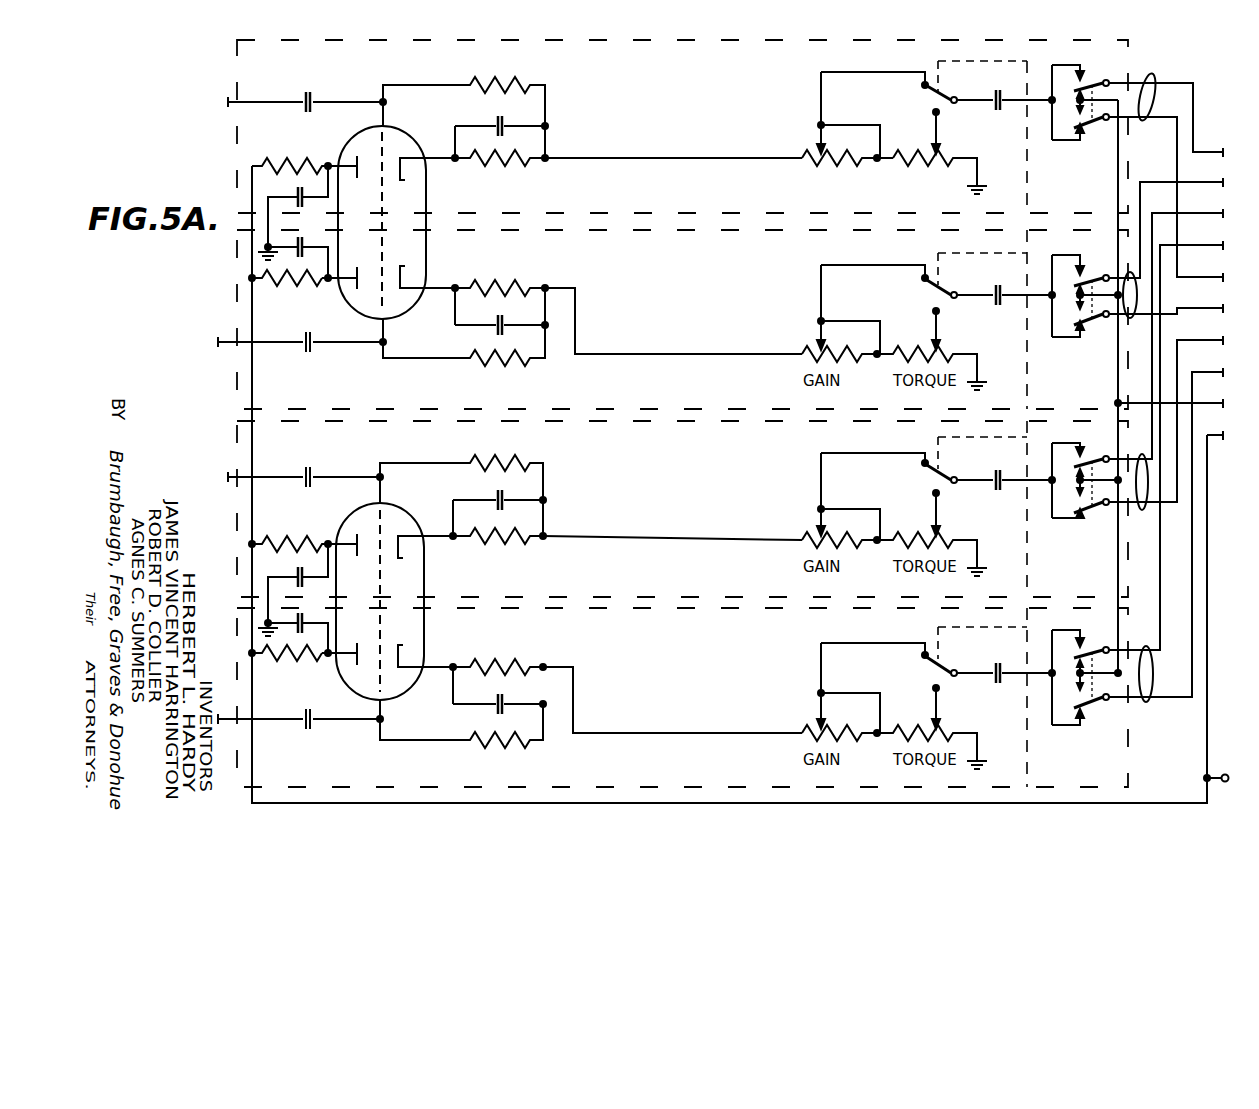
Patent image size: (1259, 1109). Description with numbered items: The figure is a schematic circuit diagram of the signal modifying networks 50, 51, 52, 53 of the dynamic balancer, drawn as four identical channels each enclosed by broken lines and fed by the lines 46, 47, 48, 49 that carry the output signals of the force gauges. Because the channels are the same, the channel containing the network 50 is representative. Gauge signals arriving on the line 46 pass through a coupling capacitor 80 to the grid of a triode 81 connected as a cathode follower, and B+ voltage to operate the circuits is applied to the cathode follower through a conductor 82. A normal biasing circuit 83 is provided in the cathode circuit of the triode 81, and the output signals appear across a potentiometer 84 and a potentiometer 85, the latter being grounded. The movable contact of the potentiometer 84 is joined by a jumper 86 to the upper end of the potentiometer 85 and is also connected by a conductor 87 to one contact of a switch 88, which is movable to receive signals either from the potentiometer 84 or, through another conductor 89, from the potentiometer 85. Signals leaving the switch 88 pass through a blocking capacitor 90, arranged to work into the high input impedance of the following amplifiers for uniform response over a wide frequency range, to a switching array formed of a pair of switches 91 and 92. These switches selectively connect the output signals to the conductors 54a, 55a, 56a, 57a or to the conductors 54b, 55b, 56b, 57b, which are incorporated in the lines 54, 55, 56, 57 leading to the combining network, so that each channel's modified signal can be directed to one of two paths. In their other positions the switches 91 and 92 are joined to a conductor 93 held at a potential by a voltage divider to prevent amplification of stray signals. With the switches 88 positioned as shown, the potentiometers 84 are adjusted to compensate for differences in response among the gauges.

The line 46 is at (229, 100).
The line 47 is at (220, 341).
The line 48 is at (229, 476).
The line 49 is at (228, 718).
The signal modifying network 50 is at (268, 40).
The signal modifying network 51 is at (237, 296).
The signal modifying network 52 is at (237, 503).
The signal modifying network 53 is at (237, 675).
The line 54 is at (1159, 82).
The conductor 54a is at (1194, 292).
The conductor 54b is at (1185, 90).
The line 55 is at (1125, 318).
The conductor 55a is at (1186, 315).
The conductor 55b is at (1188, 204).
The line 56 is at (1142, 510).
The conductor 56a is at (1190, 346).
The conductor 56b is at (1188, 235).
The line 57 is at (1148, 702).
The conductor 57a is at (1193, 618).
The conductor 57b is at (1188, 253).
The coupling capacitor 80 is at (313, 101).
The triode 81 is at (414, 126).
The conductor 82 is at (262, 808).
The biasing circuit 83 is at (507, 193).
The potentiometer 84 is at (811, 146).
The potentiometer 85 is at (966, 146).
The jumper 86 is at (838, 130).
The conductor 87 is at (860, 74).
The switch 88 is at (935, 63).
The conductor 89 is at (934, 123).
The blocking capacitor 90 is at (995, 92).
The switch 91 is at (1113, 145).
The switch 92 is at (1079, 93).
The conductor 93 is at (1116, 178).